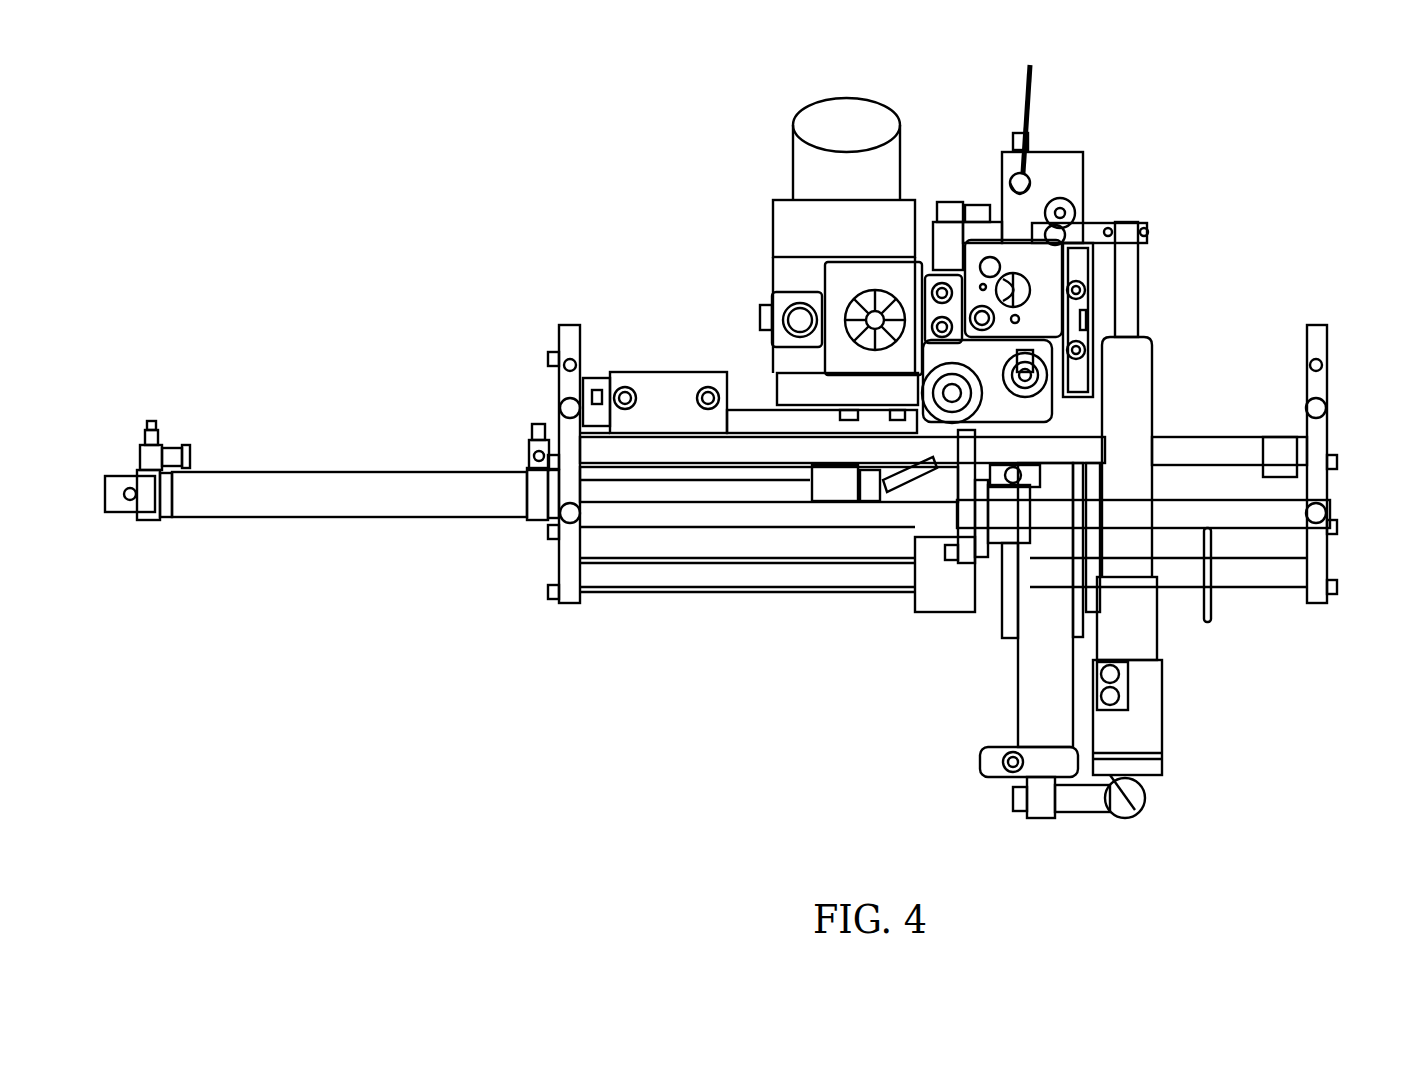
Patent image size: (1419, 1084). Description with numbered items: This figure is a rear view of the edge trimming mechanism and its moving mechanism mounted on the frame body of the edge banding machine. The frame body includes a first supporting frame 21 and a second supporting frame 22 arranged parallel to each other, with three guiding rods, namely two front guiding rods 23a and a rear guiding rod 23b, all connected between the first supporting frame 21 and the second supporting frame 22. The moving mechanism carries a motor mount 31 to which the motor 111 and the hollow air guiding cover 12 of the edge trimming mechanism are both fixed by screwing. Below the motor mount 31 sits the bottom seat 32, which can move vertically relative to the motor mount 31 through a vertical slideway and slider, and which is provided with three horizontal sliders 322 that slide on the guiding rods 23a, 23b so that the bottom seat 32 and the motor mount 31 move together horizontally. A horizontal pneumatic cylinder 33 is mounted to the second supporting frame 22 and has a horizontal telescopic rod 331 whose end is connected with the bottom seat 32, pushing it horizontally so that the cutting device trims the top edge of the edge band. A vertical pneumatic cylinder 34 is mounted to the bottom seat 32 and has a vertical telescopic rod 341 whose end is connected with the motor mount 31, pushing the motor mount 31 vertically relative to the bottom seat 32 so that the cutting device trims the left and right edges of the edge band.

The air guiding cover 12 is at (808, 170).
The motor 111 is at (850, 275).
The motor mount 31 is at (948, 255).
The vertical telescopic rod 341 is at (1142, 250).
The second supporting frame 22 is at (568, 340).
The vertical pneumatic cylinder 34 is at (1153, 382).
The first supporting frame 21 is at (1318, 342).
The horizontal pneumatic cylinder 33 is at (350, 502).
The horizontal telescopic rod 331 is at (678, 490).
The bottom seat 32 is at (1012, 452).
The horizontal slider 322 is at (1015, 515).
The front guiding rod 23a is at (1235, 453).
The rear guiding rod 23b is at (1285, 512).